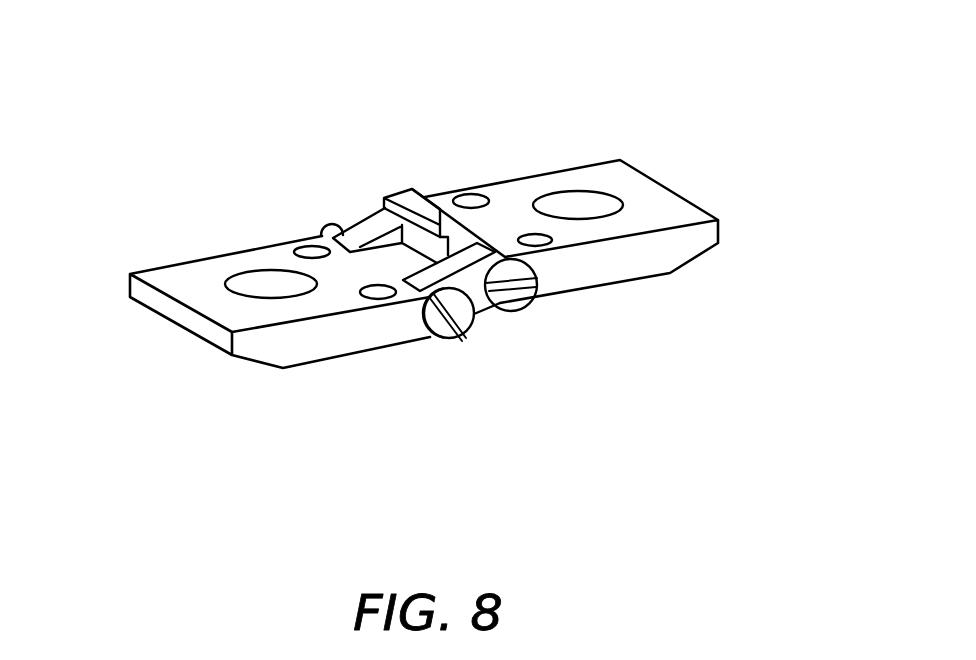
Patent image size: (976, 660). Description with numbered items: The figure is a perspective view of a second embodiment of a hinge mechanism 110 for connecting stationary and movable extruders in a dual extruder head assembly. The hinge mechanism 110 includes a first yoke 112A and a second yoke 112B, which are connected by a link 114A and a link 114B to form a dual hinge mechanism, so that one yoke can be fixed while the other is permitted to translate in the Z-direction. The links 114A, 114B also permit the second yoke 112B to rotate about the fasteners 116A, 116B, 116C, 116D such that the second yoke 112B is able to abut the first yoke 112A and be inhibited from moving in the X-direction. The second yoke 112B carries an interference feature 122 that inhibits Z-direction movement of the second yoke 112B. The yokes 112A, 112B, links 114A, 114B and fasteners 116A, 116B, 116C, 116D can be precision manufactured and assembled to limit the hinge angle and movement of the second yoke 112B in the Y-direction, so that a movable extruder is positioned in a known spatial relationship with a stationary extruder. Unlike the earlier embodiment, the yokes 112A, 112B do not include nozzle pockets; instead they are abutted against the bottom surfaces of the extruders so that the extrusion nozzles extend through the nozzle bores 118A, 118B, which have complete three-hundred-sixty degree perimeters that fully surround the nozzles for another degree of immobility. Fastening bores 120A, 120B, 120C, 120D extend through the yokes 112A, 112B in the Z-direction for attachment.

The hinge mechanism 110 is at (713, 130).
The first yoke 112A is at (208, 305).
The second yoke 112B is at (702, 212).
The link 114A is at (488, 315).
The link 114B is at (371, 226).
The fastener 116A is at (442, 330).
The fastener 116B is at (517, 300).
The fastener 116C is at (325, 225).
The fastener 116D is at (372, 207).
The nozzle bore 118A is at (243, 290).
The nozzle bore 118B is at (568, 206).
The fastening bore 120A is at (368, 292).
The fastening bore 120B is at (548, 242).
The fastening bore 120C is at (298, 250).
The fastening bore 120D is at (473, 198).
The interference feature 122 is at (428, 202).